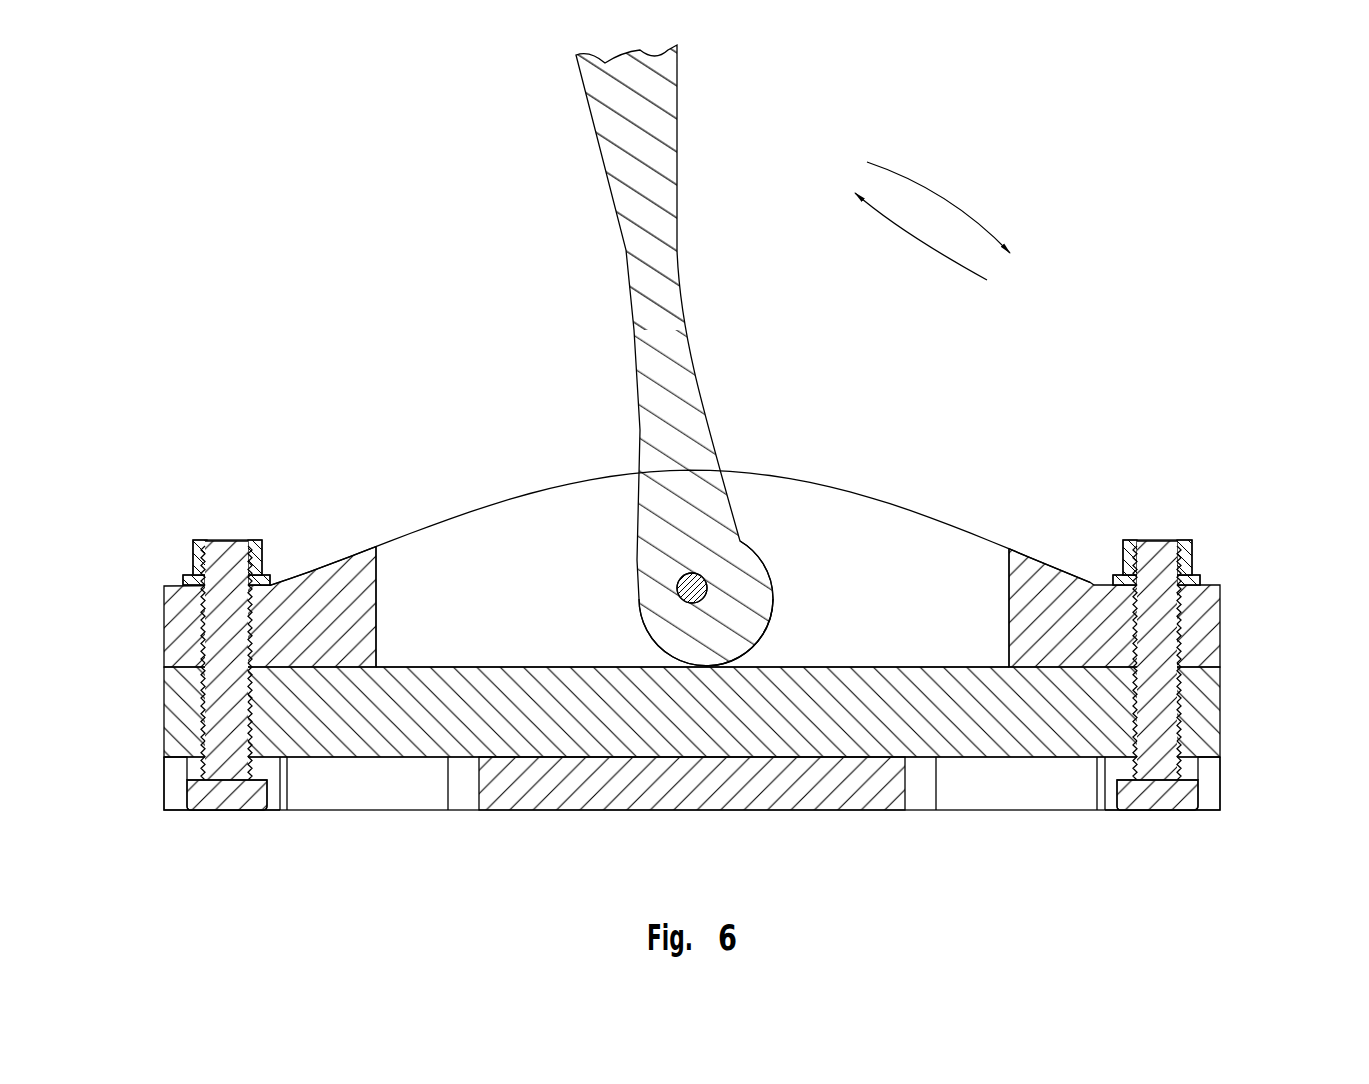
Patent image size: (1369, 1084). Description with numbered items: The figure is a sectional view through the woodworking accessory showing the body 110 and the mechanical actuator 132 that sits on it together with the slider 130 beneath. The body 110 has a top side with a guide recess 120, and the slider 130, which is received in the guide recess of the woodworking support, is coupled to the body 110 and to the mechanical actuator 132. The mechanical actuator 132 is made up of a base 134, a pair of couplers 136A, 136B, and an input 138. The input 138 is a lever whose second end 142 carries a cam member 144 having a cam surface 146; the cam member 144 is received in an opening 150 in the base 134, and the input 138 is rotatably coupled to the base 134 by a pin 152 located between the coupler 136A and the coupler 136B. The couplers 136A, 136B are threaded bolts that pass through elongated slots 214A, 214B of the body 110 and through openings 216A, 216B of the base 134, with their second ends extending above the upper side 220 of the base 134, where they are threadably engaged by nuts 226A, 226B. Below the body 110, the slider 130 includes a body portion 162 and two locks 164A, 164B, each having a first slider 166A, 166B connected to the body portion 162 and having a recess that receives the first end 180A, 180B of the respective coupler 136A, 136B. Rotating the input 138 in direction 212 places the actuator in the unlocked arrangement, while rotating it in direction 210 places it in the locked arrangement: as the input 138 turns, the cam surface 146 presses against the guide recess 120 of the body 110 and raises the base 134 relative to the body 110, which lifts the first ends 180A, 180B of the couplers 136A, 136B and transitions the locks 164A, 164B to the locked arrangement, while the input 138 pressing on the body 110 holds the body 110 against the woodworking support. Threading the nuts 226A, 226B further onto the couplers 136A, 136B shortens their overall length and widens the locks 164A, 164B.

The body 110 is at (433, 738).
The guide recess 120 is at (706, 678).
The slider 130 is at (909, 843).
The mechanical actuator 132 is at (456, 261).
The base 134 is at (333, 540).
The coupler 136A is at (1182, 680).
The coupler 136B is at (221, 647).
The input 138 is at (710, 147).
The second end 142 is at (569, 475).
The cam member 144 is at (757, 611).
The cam surface 146 is at (774, 597).
The opening 150 is at (440, 577).
The pin 152 is at (694, 573).
The body portion 162 is at (596, 810).
The lock 164A is at (1244, 812).
The lock 164B is at (168, 827).
The first slider 166A is at (1210, 780).
The first slider 166B is at (168, 778).
The first end 180A is at (1162, 812).
The first end 180B is at (233, 810).
The direction 210 is at (942, 200).
The direction 212 is at (925, 228).
The elongated slot 214A is at (1186, 730).
The elongated slot 214B is at (202, 688).
The opening 216A is at (1184, 604).
The opening 216B is at (202, 597).
The upper side 220 is at (1066, 557).
The nut 226A is at (1187, 532).
The nut 226B is at (201, 531).